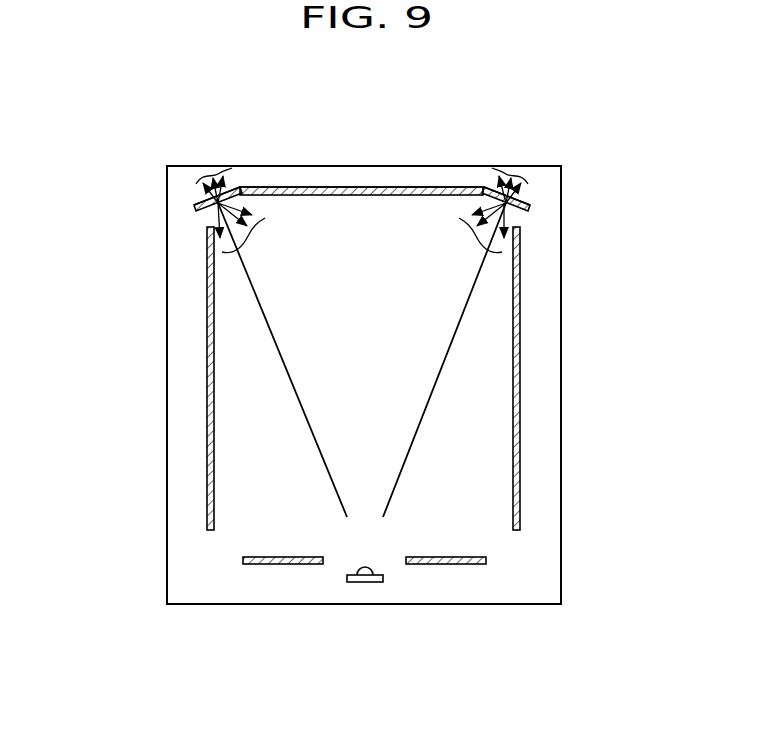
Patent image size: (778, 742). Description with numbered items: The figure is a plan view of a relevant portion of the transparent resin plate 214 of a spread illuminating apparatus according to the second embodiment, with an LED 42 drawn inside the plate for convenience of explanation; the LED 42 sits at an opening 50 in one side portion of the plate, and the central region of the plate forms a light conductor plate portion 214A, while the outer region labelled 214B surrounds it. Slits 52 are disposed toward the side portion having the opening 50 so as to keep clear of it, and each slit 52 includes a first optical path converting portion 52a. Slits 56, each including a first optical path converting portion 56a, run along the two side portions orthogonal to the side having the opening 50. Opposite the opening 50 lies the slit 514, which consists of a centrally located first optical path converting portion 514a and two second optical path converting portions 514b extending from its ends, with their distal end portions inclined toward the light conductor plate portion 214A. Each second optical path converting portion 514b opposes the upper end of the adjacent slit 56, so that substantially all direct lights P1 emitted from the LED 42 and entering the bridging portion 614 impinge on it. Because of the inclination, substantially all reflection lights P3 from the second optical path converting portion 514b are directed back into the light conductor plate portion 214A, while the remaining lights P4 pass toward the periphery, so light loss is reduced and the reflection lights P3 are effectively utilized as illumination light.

The transparent resin plate 214 is at (562, 440).
The light conductor plate portion 214A is at (408, 347).
The housing side 214B is at (163, 482).
The slit 514 is at (341, 186).
The first optical path converting portion 514a is at (412, 186).
The second optical path converting portion 514b is at (200, 193).
The bridging portion 614 is at (207, 221).
The slit 56 is at (383, 378).
The first optical path converting portion 56a is at (207, 365).
The slit 52 is at (374, 606).
The first optical path converting portion 52a is at (262, 565).
The opening 50 is at (353, 585).
The LED 42 is at (378, 584).
The optical path P1 is at (257, 297).
The reflection light P3 is at (362, 235).
The light path P4 is at (217, 168).